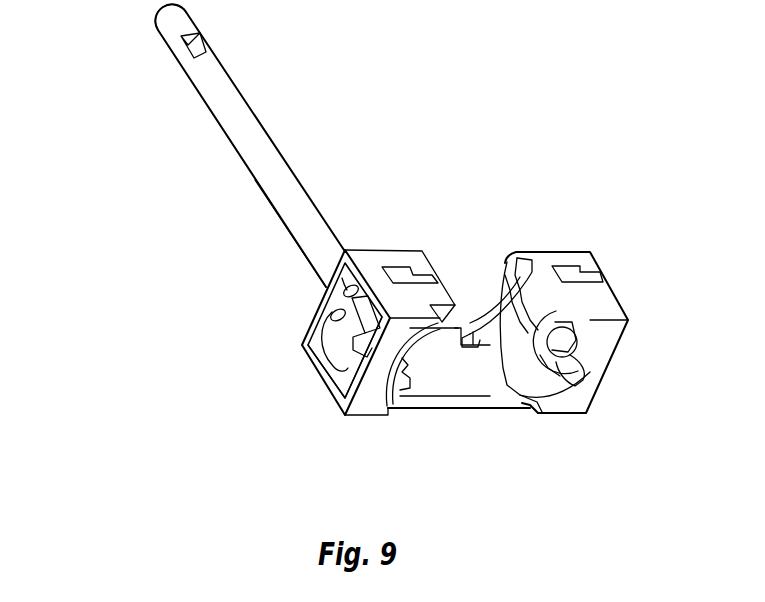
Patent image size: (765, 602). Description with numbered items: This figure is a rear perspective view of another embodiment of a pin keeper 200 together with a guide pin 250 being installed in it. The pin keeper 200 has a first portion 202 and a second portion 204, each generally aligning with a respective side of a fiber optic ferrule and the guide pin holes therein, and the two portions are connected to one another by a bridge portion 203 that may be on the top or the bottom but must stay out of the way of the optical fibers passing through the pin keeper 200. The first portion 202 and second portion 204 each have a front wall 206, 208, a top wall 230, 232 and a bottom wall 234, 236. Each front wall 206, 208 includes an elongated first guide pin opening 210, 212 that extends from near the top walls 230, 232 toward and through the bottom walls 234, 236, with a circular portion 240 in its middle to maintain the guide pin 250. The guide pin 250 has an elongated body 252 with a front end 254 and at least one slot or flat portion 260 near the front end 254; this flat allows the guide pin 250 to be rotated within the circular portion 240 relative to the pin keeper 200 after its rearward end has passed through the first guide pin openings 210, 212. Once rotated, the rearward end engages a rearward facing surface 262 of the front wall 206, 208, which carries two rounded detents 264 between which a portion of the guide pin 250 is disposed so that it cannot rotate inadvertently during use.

The pin keeper 200 is at (624, 171).
The first portion 202 is at (372, 417).
The bridge portion 203 is at (457, 385).
The second portion 204 is at (626, 338).
The front wall 206 is at (333, 303).
The front wall 208 is at (532, 250).
The first guide pin opening 210 is at (333, 346).
The first guide pin opening 212 is at (474, 322).
The top wall 230 is at (391, 253).
The top wall 232 is at (586, 268).
The bottom wall 234 is at (330, 390).
The bottom wall 236 is at (497, 372).
The circular portion 240 is at (505, 345).
The guide pin 250 is at (244, 93).
The elongated body 252 is at (272, 202).
The front end 254 is at (150, 15).
The slot or flat portion 260 is at (190, 48).
The rearward facing surface 262 is at (343, 280).
The detents 264 is at (320, 318).